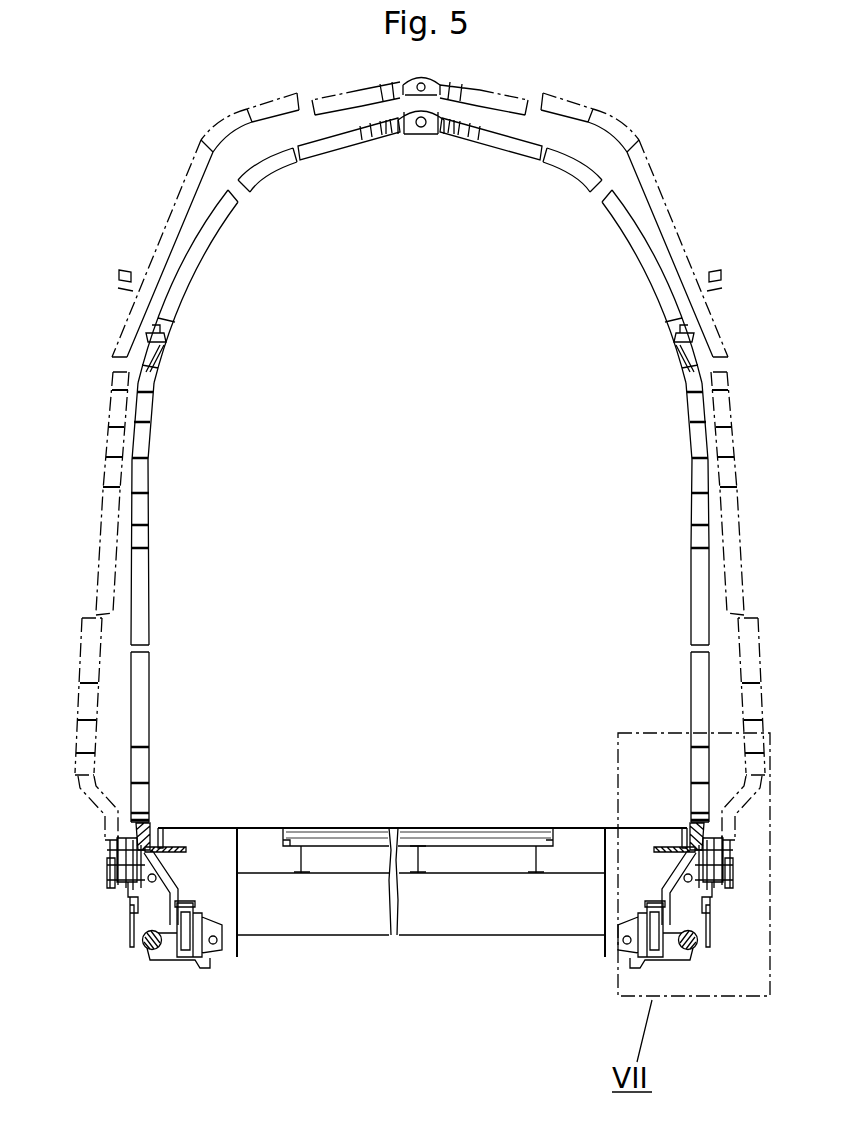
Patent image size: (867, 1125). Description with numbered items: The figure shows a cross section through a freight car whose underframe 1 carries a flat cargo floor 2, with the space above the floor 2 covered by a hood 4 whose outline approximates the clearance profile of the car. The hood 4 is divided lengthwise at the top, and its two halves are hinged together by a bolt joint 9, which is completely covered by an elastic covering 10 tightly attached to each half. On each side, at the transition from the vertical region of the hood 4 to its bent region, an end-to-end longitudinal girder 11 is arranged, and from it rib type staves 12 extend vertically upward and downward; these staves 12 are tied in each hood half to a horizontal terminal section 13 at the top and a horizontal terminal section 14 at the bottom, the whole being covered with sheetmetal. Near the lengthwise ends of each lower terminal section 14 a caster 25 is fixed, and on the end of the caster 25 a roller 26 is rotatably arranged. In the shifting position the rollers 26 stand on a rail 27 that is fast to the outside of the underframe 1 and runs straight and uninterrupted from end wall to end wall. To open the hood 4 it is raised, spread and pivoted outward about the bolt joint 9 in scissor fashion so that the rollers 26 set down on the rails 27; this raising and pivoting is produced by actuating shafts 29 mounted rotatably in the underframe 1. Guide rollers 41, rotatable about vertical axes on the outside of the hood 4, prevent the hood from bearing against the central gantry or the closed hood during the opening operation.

The underframe 1 is at (503, 905).
The cargo floor 2 is at (340, 830).
The hood 4 is at (188, 267).
The bolt joint 9 is at (419, 133).
The elastic covering 10 is at (443, 117).
The longitudinal girder 11 is at (696, 432).
The rib type staves 12 is at (655, 273).
The upper horizontal terminal section 13 is at (467, 135).
The lower horizontal terminal section 14 is at (700, 762).
The caster 25 is at (175, 883).
The roller 26 is at (686, 876).
The rail 27 is at (130, 900).
The actuating shaft 29 is at (148, 948).
The guide roller 41 is at (150, 338).